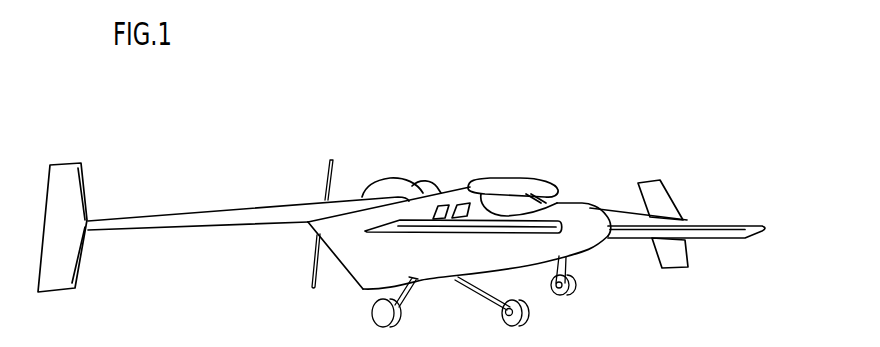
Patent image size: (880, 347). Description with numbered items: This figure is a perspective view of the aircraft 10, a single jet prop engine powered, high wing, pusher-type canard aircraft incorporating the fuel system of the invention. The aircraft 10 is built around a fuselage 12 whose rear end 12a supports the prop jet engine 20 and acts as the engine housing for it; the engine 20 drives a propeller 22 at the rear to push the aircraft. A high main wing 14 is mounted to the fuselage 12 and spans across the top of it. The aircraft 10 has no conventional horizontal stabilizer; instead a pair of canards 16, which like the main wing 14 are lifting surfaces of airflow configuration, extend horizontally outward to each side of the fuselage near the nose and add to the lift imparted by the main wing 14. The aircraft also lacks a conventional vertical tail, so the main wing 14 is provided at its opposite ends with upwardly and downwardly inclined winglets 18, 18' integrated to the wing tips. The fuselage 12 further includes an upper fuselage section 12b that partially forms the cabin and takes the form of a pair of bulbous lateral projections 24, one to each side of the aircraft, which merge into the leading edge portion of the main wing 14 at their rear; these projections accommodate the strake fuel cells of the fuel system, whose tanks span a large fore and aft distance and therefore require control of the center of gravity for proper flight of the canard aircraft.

The aircraft 10 is at (521, 131).
The fuselage 12 is at (443, 272).
The rear end of the fuselage 12a is at (360, 255).
The upper fuselage section 12b is at (560, 205).
The main wing 14 is at (238, 218).
The canards 16 is at (442, 237).
The upwardly inclined winglet 18 is at (370, 227).
The downwardly inclined winglet 18' is at (380, 271).
The engine 20 is at (388, 184).
The propeller 22 is at (312, 288).
The bulbous lateral projections 24 is at (461, 190).